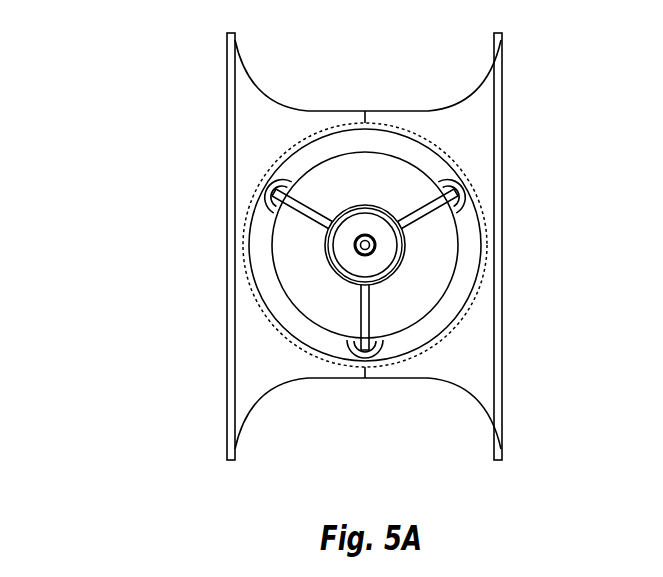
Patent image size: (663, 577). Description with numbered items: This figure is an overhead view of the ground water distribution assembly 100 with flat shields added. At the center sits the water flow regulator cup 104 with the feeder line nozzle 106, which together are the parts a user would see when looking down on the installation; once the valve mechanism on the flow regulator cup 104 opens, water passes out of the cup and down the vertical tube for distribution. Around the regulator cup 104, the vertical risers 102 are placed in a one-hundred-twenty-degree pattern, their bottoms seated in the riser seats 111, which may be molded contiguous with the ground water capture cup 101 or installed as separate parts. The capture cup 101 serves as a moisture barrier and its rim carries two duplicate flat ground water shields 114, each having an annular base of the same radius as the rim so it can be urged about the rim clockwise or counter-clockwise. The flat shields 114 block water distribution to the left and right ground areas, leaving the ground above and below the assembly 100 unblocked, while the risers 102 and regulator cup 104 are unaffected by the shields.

The ground water distribution assembly 100 is at (100, 102).
The ground water capture cup 101 is at (478, 296).
The vertical risers 102 is at (350, 315).
The water flow regulator cup 104 is at (357, 206).
The feeder line nozzle 106 is at (377, 246).
The riser seats 111 is at (290, 190).
The flat ground water shield 114 is at (482, 391).